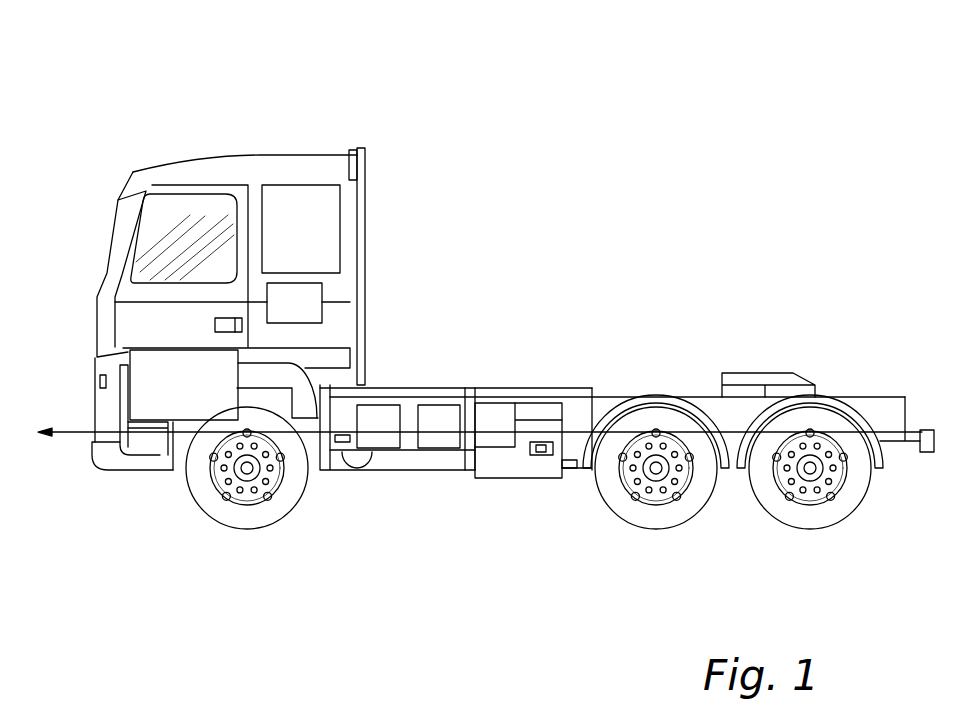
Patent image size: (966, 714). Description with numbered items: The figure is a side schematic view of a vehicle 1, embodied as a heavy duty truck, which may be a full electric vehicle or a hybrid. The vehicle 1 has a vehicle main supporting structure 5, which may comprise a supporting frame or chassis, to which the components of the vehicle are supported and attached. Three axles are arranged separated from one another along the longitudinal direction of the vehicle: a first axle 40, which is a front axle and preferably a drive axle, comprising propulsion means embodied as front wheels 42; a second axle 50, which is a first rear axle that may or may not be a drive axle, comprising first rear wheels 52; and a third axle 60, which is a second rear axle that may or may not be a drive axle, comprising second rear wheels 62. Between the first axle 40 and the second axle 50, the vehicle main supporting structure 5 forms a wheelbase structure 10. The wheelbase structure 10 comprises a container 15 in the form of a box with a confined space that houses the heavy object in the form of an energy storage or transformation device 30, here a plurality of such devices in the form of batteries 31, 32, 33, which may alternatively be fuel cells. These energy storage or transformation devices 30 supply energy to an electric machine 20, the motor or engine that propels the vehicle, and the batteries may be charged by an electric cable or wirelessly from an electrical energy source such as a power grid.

The vehicle 1 is at (196, 93).
The vehicle main supporting structure 5 is at (623, 319).
The wheelbase structure 10 is at (504, 298).
The container 15 is at (510, 388).
The electric machine 20 is at (157, 425).
The energy storage or transformation device 30 is at (497, 527).
The battery 31 is at (380, 440).
The battery 32 is at (437, 440).
The battery 33 is at (495, 440).
The first axle 40 is at (247, 468).
The front wheels 42 is at (267, 527).
The second axle 50 is at (656, 468).
The first rear wheels 52 is at (657, 518).
The third axle 60 is at (810, 468).
The second rear wheels 62 is at (810, 527).